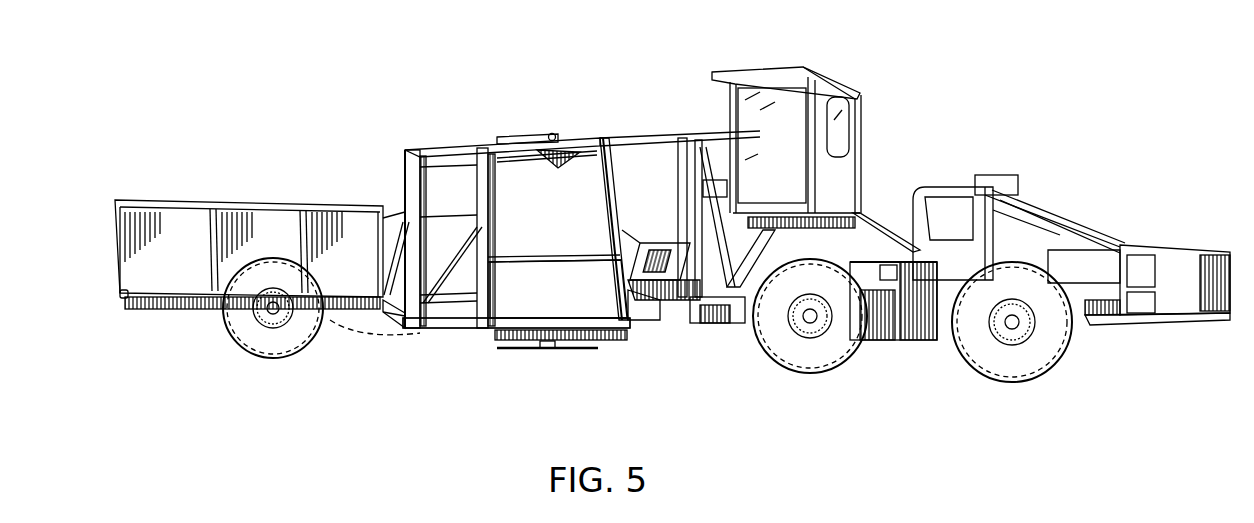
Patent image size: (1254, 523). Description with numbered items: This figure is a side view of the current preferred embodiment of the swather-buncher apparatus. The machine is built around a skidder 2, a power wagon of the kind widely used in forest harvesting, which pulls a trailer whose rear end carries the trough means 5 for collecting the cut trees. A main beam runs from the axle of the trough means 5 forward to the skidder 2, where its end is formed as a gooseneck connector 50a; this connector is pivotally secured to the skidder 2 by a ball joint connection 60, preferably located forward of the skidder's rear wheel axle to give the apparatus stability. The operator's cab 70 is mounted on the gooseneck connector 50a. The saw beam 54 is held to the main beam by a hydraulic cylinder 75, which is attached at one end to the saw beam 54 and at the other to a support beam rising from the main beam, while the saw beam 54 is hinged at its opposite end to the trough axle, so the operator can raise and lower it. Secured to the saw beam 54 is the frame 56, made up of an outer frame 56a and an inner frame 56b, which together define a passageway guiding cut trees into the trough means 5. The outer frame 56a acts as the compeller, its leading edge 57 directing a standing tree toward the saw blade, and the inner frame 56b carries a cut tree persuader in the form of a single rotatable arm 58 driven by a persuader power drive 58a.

The skidder 2 is at (1082, 192).
The trough means 5 is at (218, 200).
The gooseneck connector 50a is at (880, 210).
The saw beam 54 is at (385, 317).
The frame 56 is at (460, 122).
The outer frame 56a is at (405, 170).
The inner frame 56b is at (617, 138).
The leading edge 57 is at (616, 222).
The rotatable arm 58 is at (502, 138).
The persuader power drive 58a is at (560, 165).
The ball joint connection 60 is at (882, 247).
The operator's cab 70 is at (850, 120).
The hydraulic cylinder 75 is at (693, 207).